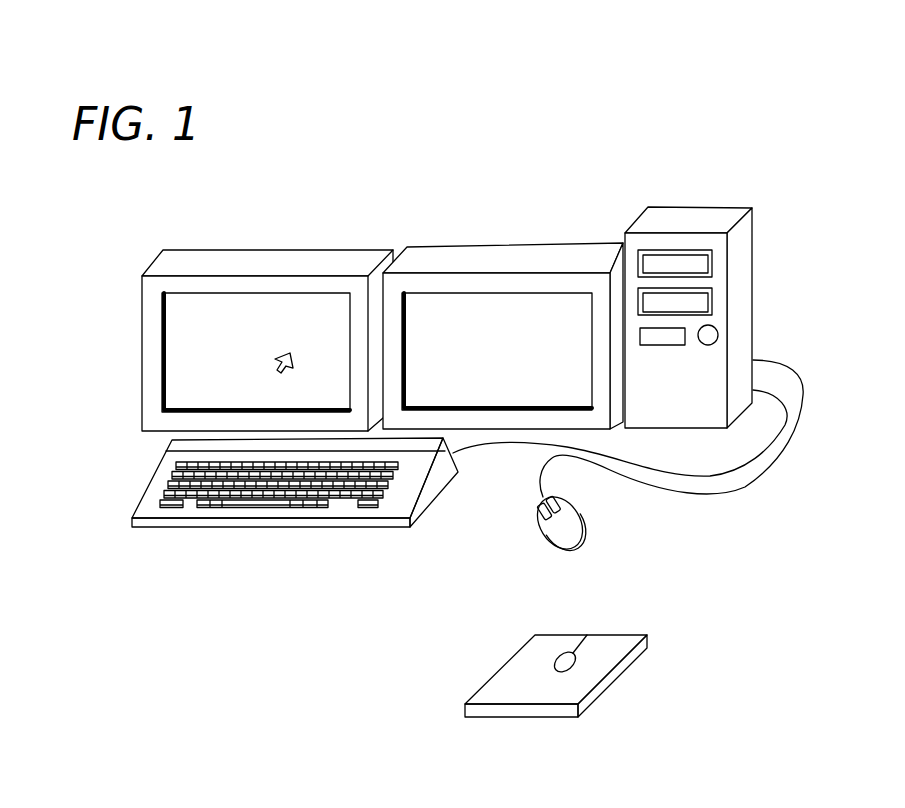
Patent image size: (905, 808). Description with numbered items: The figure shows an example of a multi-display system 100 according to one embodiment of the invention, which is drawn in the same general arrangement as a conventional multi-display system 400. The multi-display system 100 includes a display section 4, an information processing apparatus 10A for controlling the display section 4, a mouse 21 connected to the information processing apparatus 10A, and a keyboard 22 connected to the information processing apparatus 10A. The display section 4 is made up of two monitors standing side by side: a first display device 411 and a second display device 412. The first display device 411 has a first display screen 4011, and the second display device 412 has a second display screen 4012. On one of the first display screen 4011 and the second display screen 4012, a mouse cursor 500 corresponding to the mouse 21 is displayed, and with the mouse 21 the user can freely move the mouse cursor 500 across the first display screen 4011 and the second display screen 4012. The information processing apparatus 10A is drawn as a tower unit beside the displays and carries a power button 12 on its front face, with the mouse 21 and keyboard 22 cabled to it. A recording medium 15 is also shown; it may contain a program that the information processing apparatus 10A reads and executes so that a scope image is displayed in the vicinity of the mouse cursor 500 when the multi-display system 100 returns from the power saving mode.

The multi-display system 100 is at (767, 100).
The display section 4 is at (418, 170).
The first display device 411 is at (265, 248).
The second display device 412 is at (473, 263).
The first display screen 4011 is at (186, 321).
The second display screen 4012 is at (545, 315).
The mouse cursor 500 is at (276, 362).
The information processing apparatus 10A is at (707, 217).
The power button 12 is at (710, 334).
The multi-display system 400 is at (350, 608).
The keyboard 22 is at (293, 527).
The mouse 21 is at (547, 527).
The recording medium 15 is at (622, 640).